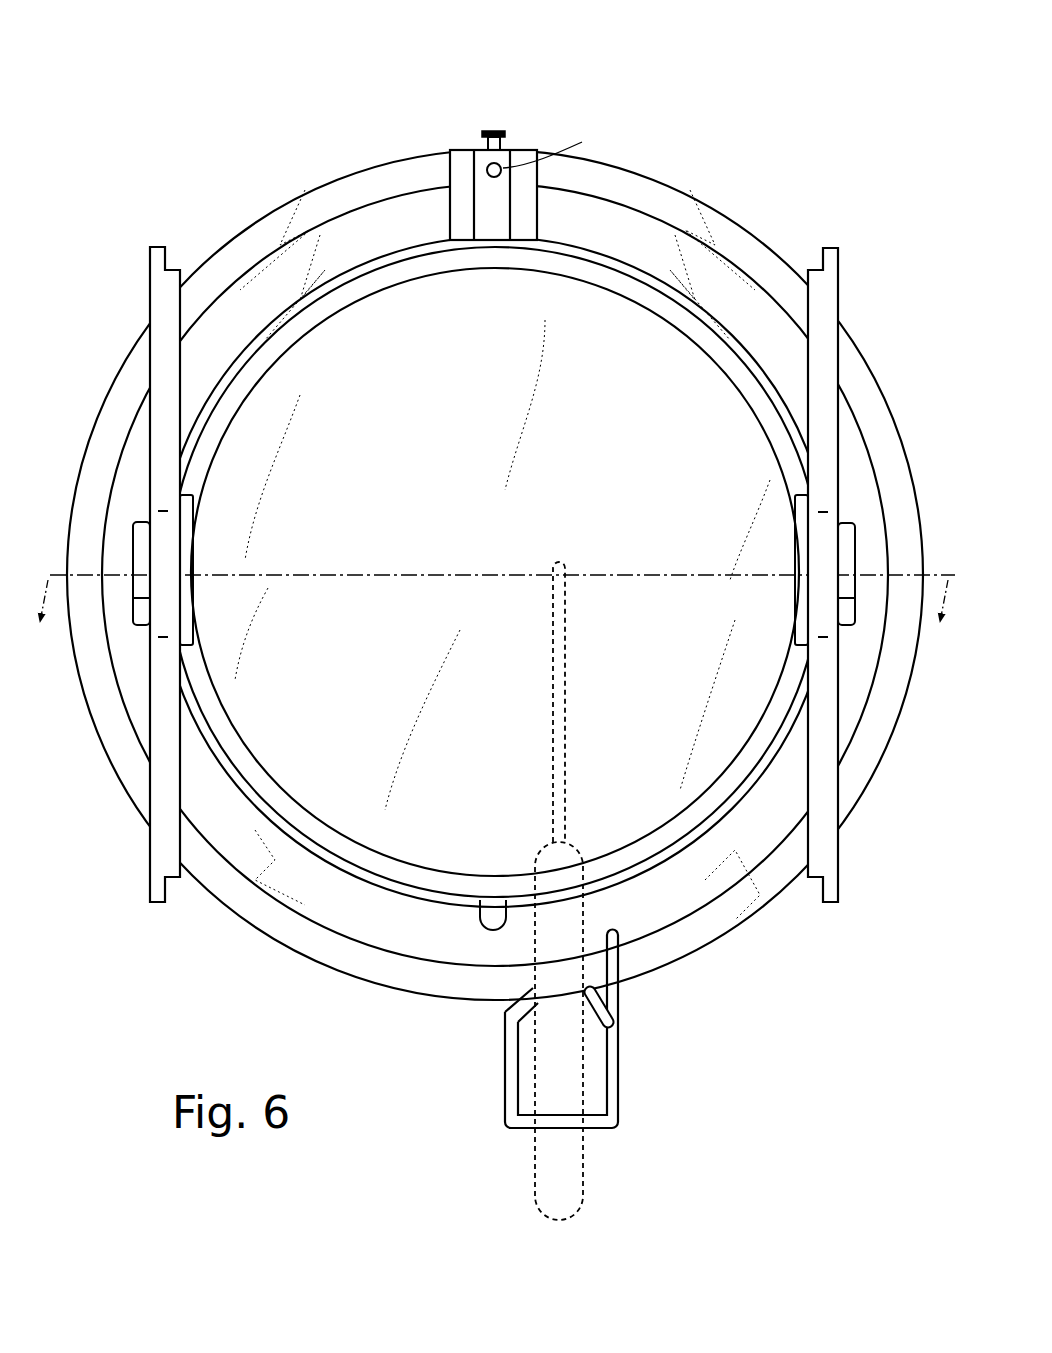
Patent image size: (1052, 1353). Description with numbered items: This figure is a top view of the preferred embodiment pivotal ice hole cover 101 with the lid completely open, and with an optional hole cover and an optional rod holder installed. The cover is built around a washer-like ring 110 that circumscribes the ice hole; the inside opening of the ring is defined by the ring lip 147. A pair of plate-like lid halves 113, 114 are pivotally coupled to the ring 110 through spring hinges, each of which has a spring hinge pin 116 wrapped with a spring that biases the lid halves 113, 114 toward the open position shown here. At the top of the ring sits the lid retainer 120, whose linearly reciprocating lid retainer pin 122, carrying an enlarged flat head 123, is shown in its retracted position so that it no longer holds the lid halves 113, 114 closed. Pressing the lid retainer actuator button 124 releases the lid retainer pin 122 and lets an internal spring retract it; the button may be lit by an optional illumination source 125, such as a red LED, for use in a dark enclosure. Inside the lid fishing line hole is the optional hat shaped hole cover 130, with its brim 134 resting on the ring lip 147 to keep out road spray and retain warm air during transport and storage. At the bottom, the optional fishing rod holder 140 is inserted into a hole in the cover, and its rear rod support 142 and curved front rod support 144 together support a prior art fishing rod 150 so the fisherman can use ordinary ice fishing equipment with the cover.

The pivotal ice hole cover 101 is at (260, 50).
The ring 110 is at (617, 182).
The lid half 113 is at (824, 860).
The lid half 114 is at (163, 293).
The spring hinge pin 116 is at (147, 615).
The lid retainer 120 is at (493, 128).
The lid retainer pin 122 is at (504, 148).
The enlarged flat head 123 is at (482, 133).
The lid retainer actuator button 124 is at (540, 160).
The illumination source 125 is at (503, 170).
The hat shaped hole cover 130 is at (654, 340).
The brim 134 is at (822, 252).
The fishing rod holder 140 is at (628, 1052).
The rear rod support 142 is at (535, 1128).
The curved front rod support 144 is at (512, 1010).
The ring lip 147 is at (710, 325).
The fishing rod 150 is at (554, 1160).